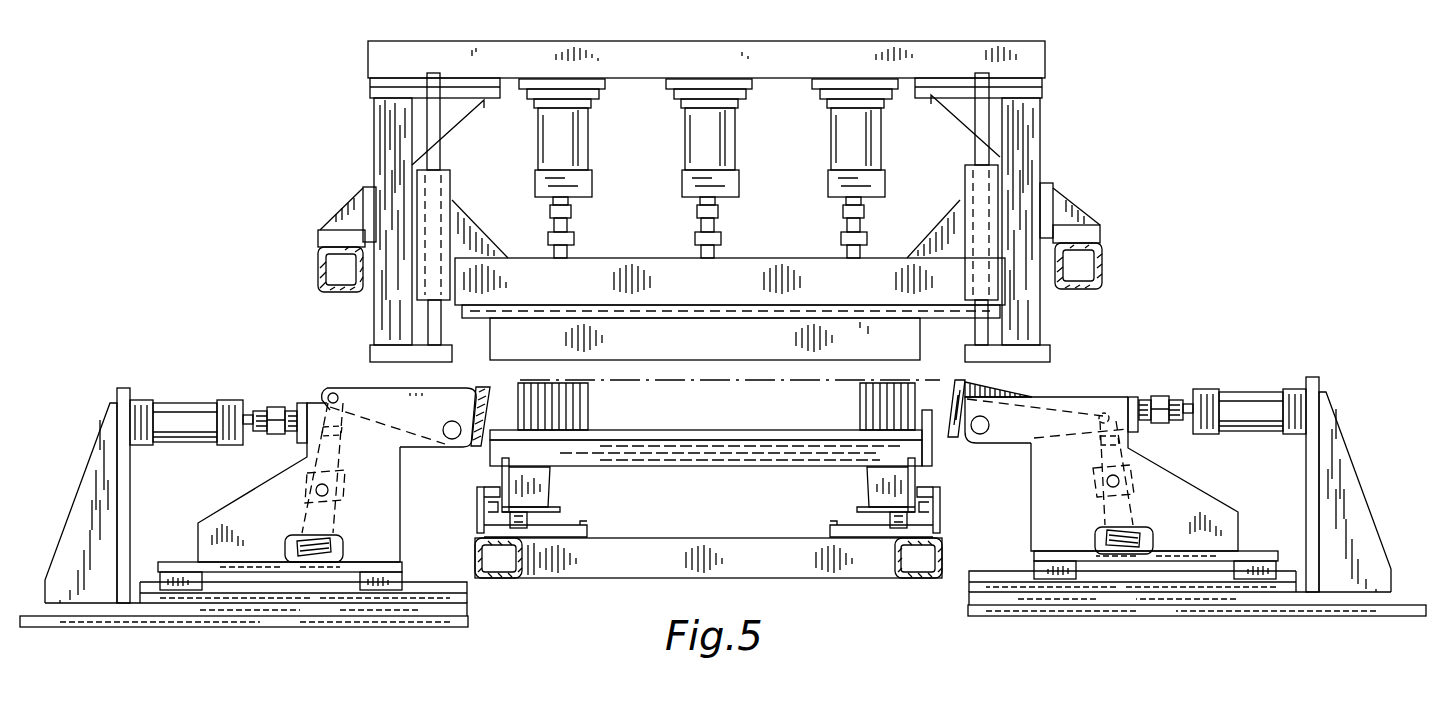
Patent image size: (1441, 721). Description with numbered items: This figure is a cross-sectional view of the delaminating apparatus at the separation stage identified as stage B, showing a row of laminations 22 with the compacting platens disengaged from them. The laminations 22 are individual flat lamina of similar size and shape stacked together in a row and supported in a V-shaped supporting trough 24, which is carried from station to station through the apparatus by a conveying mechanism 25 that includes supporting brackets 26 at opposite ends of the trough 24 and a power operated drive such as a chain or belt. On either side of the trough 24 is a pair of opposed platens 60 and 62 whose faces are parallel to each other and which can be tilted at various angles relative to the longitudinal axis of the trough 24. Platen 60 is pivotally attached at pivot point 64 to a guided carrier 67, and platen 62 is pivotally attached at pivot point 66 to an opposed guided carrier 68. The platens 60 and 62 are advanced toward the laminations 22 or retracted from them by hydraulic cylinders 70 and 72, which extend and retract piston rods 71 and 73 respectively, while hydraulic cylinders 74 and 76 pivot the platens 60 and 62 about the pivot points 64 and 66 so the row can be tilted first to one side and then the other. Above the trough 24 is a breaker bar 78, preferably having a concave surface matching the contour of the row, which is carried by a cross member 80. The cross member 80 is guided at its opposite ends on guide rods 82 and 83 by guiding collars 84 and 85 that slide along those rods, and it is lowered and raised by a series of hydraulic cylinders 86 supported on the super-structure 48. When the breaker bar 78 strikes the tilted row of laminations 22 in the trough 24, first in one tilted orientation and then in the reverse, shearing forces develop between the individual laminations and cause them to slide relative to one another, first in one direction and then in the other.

The stage B is at (1082, 108).
The super-structure 48 is at (708, 64).
The hydraulic cylinders 86 is at (572, 132).
The guiding collar 84 is at (455, 192).
The guiding collar 85 is at (965, 204).
The guide rod 82 is at (428, 322).
The guide rod 83 is at (990, 318).
The cross member 80 is at (734, 294).
The breaker bar 78 is at (734, 345).
The laminations 22 is at (900, 398).
The supporting trough 24 is at (736, 466).
The conveying mechanism 25 is at (600, 528).
The supporting brackets 26 is at (505, 478).
The platen 60 is at (490, 390).
The platen 62 is at (975, 390).
The pivot point 64 is at (443, 426).
The pivot point 66 is at (990, 424).
The guided carrier 67 is at (382, 520).
The guided carrier 68 is at (1078, 512).
The hydraulic cylinder 70 is at (190, 412).
The piston rod 71 is at (250, 412).
The hydraulic cylinder 72 is at (1272, 394).
The piston rod 73 is at (1188, 402).
The hydraulic cylinder 74 is at (308, 516).
The hydraulic cylinder 76 is at (1122, 508).